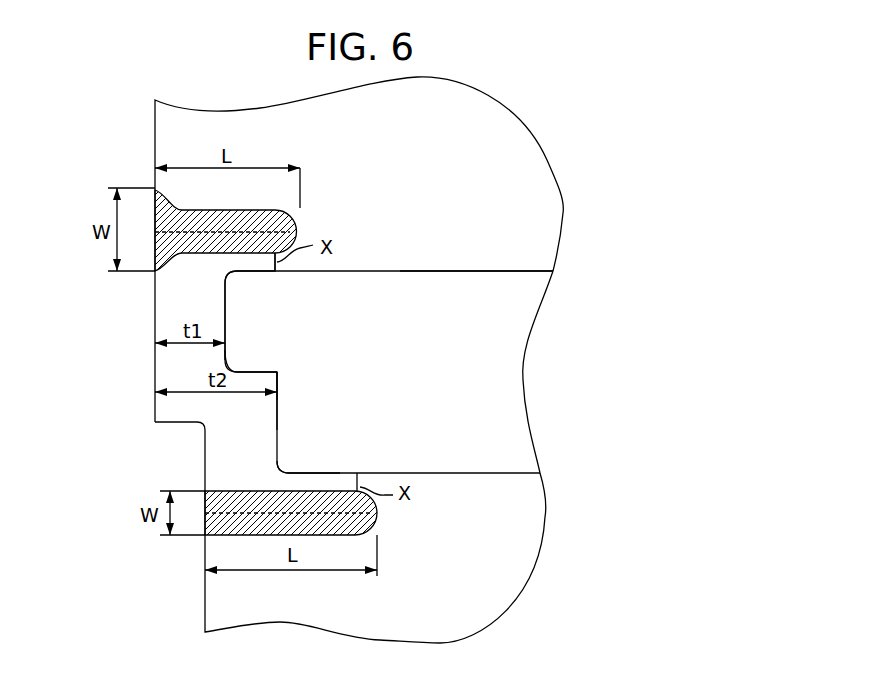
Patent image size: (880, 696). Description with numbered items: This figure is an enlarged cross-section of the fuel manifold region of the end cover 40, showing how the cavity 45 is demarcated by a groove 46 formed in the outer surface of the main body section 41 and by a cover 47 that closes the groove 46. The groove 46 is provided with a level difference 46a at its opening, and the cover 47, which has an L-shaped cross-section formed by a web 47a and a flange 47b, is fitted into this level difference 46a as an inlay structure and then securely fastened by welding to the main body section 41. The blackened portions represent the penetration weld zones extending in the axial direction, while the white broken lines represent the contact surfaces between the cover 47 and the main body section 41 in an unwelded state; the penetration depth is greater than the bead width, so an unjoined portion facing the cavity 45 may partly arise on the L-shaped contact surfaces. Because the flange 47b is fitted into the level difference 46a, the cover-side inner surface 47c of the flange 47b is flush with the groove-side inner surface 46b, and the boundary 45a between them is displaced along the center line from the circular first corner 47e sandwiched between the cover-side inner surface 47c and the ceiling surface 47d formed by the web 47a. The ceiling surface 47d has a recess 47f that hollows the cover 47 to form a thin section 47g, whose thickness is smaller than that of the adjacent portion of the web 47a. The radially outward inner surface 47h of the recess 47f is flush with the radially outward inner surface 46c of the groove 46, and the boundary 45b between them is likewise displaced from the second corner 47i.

The end cover 40 is at (143, 140).
The main body section 41 is at (193, 597).
The cavity 45 is at (507, 372).
The boundary 45a is at (358, 473).
The boundary 45b is at (265, 272).
The groove 46 is at (530, 288).
The level difference 46a is at (200, 238).
The groove-side inner surface 46b is at (450, 473).
The radially outward inner surface of the groove 46c is at (393, 272).
The cover 47 is at (400, 345).
The web 47a is at (282, 407).
The flange 47b is at (310, 458).
The cover-side inner surface 47c is at (337, 468).
The ceiling surface 47d is at (278, 397).
The first corner 47e is at (278, 458).
The recess 47f is at (227, 350).
The thin section 47g is at (211, 306).
The radially outward inner surface of the recess 47h is at (260, 273).
The second corner 47i is at (235, 277).